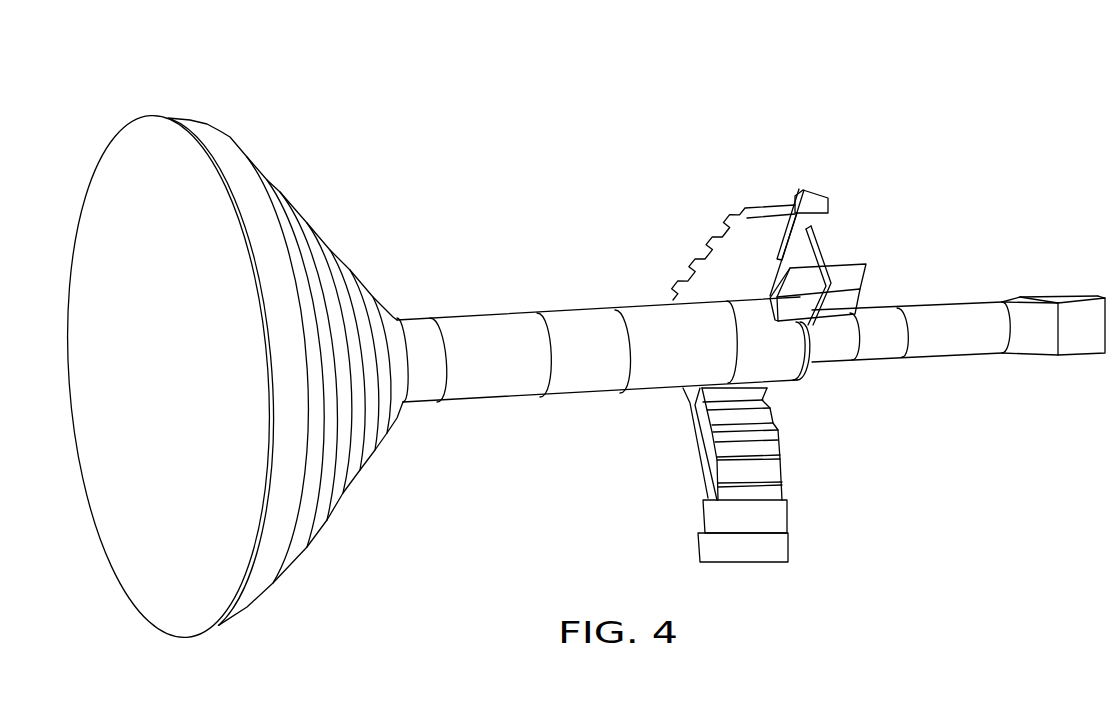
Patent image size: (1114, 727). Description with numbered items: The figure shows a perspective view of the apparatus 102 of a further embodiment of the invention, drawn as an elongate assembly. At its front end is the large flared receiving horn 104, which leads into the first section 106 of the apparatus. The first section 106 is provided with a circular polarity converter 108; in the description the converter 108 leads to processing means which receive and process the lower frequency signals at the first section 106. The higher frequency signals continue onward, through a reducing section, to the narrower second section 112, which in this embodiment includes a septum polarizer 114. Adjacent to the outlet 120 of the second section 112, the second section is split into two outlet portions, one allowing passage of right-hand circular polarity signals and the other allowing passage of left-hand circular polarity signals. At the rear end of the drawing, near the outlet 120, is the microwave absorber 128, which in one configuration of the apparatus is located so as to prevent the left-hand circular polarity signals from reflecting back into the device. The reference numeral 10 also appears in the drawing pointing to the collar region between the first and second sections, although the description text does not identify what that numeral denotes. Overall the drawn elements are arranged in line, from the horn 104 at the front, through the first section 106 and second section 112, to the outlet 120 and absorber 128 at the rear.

The launcher assembly 10 is at (805, 355).
The apparatus 102 is at (567, 290).
The receiving horn 104 is at (207, 128).
The first section 106 is at (482, 318).
The circular polarity converter 108 is at (578, 385).
The second section 112 is at (937, 369).
The septum polarizer 114 is at (933, 317).
The outlet 120 is at (1000, 353).
The microwave absorber 128 is at (1050, 296).